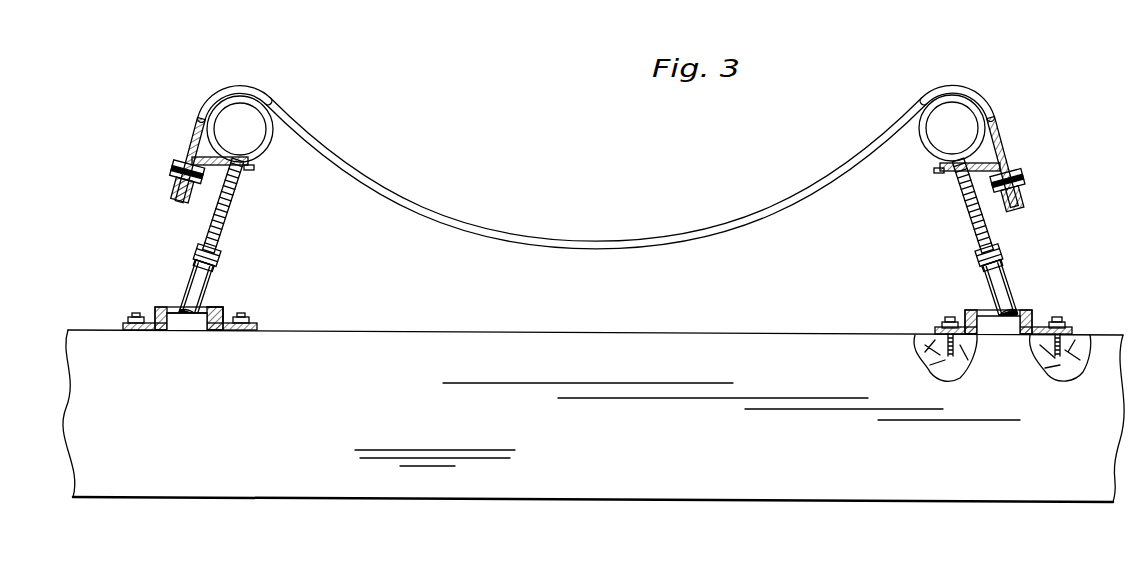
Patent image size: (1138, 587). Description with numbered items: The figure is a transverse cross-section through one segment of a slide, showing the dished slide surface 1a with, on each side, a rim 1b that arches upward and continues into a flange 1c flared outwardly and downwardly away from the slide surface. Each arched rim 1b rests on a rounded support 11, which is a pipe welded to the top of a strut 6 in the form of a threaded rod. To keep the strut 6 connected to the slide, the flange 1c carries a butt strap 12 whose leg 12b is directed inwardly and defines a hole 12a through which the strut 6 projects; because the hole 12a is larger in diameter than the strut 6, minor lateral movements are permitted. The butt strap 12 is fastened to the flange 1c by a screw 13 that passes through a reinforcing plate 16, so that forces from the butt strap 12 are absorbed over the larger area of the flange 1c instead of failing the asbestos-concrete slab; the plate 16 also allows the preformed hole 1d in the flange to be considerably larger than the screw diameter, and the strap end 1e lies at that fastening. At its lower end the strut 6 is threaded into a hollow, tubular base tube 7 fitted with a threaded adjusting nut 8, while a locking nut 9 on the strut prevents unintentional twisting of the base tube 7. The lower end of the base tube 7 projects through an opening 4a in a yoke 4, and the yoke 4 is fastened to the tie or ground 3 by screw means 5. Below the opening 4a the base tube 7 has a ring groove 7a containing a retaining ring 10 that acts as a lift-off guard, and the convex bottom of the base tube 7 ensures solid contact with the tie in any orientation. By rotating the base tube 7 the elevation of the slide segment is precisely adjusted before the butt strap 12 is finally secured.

The slide surface 1a is at (545, 240).
The rim 1b is at (225, 124).
The flange 1c is at (1000, 138).
The hole 1d is at (1027, 192).
The strap end tab 1e is at (1009, 170).
The ground / wall 3 is at (543, 377).
The yoke 4 is at (150, 331).
The opening 4a is at (180, 312).
The screw means 5 is at (1060, 327).
The strut 6 is at (215, 233).
The base tube 7 is at (210, 290).
The ring groove 7a is at (225, 310).
The adjusting nut 8 is at (188, 263).
The locking nut 9 is at (200, 255).
The retaining ring 10 is at (193, 331).
The rounded support 11 is at (267, 147).
The butt strap 12 is at (1007, 212).
The hole 12a is at (977, 276).
The leg 12b is at (940, 250).
The screw 13 is at (1027, 178).
The reinforcing plate 16 is at (182, 165).